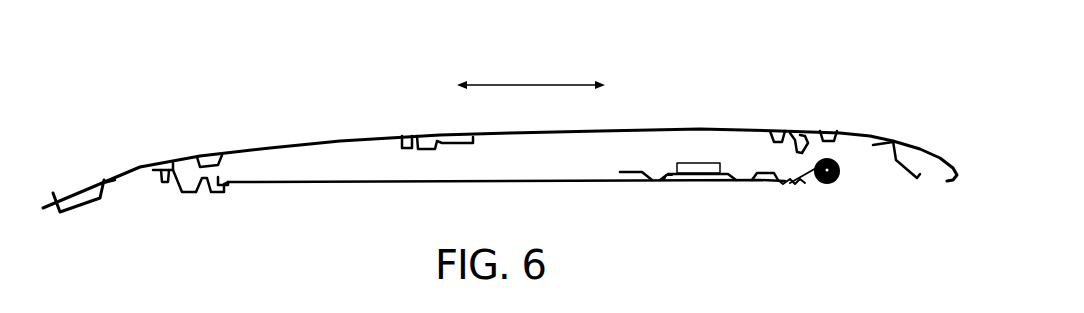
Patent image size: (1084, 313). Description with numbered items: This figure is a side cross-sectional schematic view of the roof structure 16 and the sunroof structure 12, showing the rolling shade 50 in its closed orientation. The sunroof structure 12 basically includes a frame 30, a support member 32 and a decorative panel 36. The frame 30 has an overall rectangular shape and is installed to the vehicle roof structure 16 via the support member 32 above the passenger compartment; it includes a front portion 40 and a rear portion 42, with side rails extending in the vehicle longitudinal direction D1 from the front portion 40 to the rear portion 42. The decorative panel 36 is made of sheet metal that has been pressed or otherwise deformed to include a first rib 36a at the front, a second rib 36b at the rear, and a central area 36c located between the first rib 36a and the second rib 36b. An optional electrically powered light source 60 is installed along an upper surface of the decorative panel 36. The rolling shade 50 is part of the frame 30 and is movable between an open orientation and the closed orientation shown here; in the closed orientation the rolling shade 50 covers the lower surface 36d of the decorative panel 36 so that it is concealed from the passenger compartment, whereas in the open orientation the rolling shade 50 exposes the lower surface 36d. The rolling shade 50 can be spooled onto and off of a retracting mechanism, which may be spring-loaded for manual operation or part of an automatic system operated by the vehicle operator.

The sunroof structure 12 is at (344, 132).
The roof structure 16 is at (81, 183).
The frame 30 is at (181, 187).
The support member 32 is at (222, 162).
The decorative panel 36 is at (637, 172).
The first rib 36a is at (653, 182).
The second rib 36b is at (743, 183).
The central area 36c is at (700, 176).
The lower surface 36d is at (670, 178).
The front portion 40 is at (196, 194).
The rear portion 42 is at (795, 186).
The rolling shade 50 is at (372, 183).
The electrically powered light source 60 is at (693, 163).
The vehicle longitudinal direction D1 is at (540, 85).